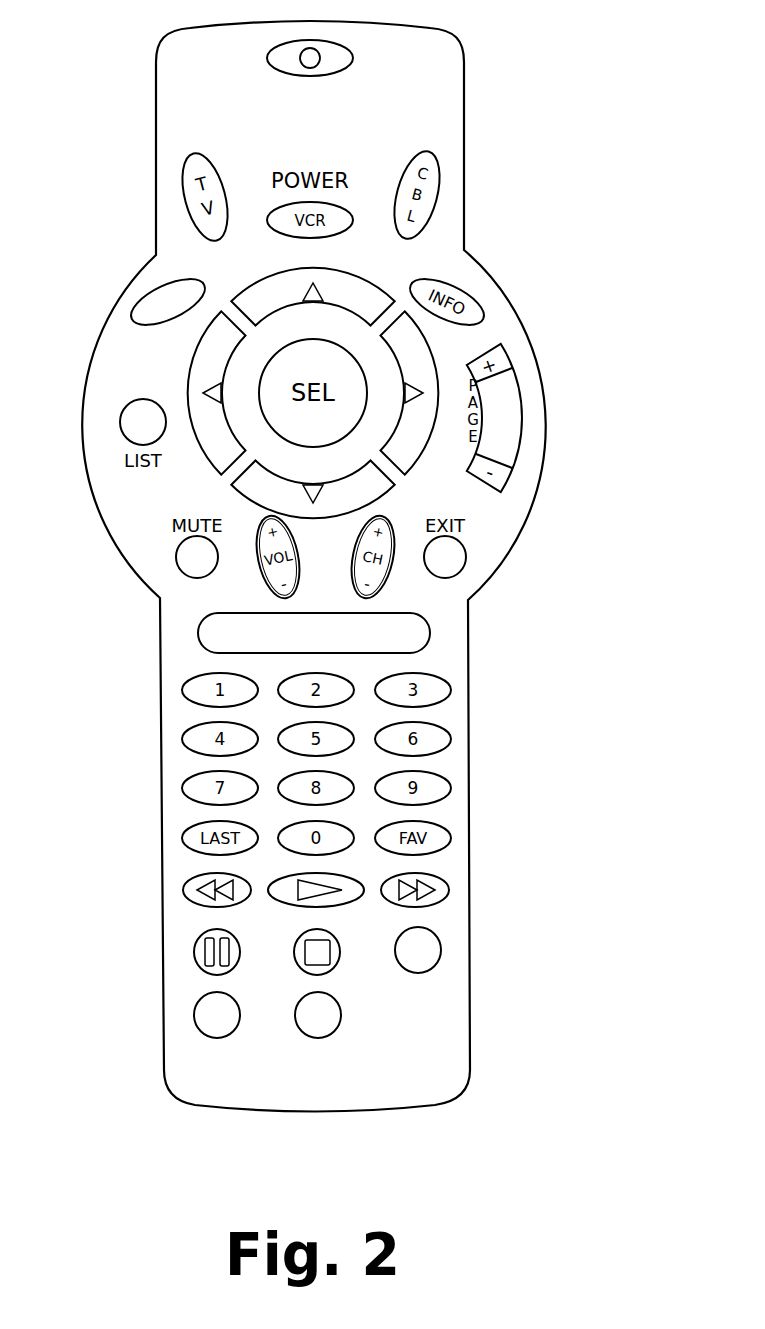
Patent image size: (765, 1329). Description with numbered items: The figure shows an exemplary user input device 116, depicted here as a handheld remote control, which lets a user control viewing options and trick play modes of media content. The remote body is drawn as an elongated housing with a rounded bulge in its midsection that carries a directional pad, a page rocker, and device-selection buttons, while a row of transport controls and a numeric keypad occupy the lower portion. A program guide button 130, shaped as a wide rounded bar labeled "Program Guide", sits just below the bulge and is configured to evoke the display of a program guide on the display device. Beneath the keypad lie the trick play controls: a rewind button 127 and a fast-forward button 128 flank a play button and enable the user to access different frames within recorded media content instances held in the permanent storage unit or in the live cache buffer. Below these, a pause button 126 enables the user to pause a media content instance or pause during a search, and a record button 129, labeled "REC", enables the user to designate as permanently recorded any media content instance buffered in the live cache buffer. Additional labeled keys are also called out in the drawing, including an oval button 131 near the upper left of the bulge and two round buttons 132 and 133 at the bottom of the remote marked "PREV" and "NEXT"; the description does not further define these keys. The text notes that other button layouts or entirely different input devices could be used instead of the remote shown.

The user input device 116 is at (503, 88).
The pause button 126 is at (194, 952).
The rewind button 127 is at (183, 890).
The fast-forward button 128 is at (450, 888).
The record button 129 is at (441, 948).
The program guide button 130 is at (430, 633).
The delete button 131 is at (128, 323).
The previous button 132 is at (197, 1020).
The next button 133 is at (341, 1014).